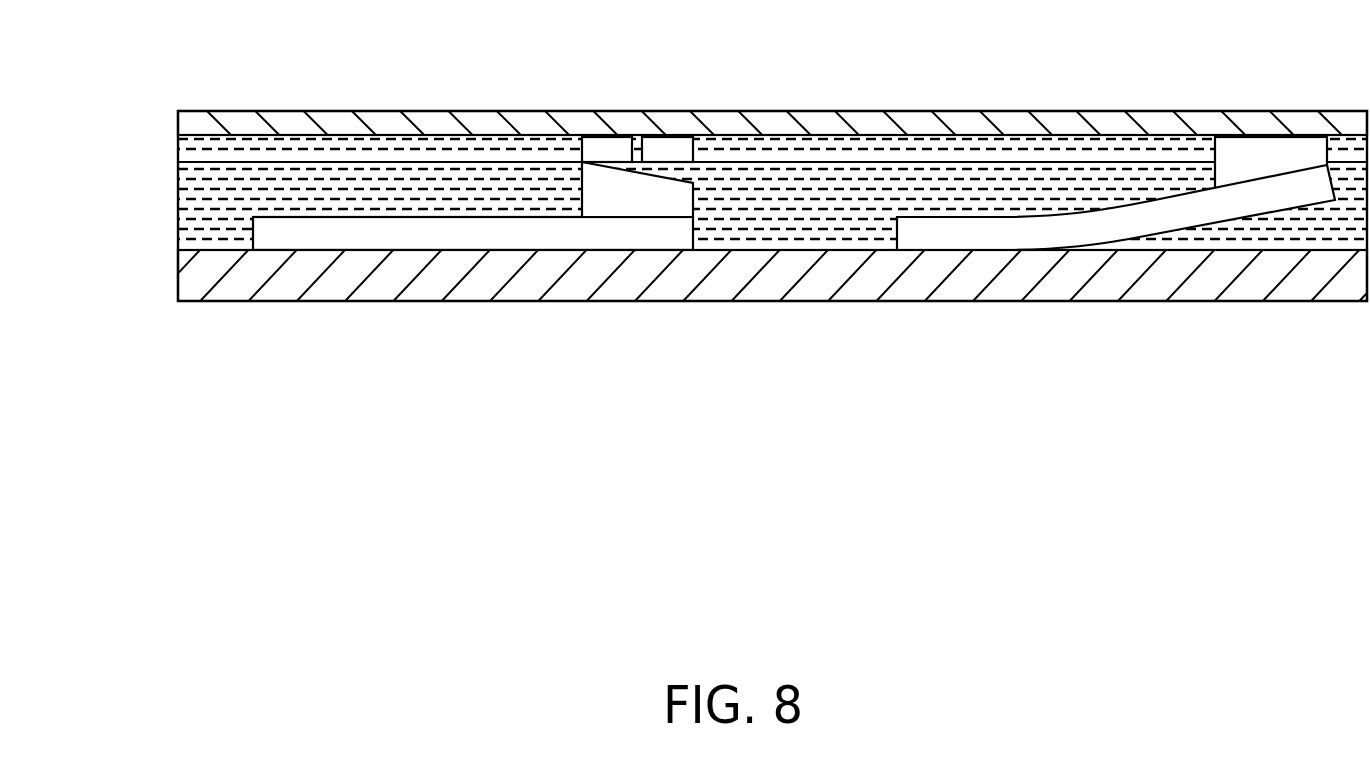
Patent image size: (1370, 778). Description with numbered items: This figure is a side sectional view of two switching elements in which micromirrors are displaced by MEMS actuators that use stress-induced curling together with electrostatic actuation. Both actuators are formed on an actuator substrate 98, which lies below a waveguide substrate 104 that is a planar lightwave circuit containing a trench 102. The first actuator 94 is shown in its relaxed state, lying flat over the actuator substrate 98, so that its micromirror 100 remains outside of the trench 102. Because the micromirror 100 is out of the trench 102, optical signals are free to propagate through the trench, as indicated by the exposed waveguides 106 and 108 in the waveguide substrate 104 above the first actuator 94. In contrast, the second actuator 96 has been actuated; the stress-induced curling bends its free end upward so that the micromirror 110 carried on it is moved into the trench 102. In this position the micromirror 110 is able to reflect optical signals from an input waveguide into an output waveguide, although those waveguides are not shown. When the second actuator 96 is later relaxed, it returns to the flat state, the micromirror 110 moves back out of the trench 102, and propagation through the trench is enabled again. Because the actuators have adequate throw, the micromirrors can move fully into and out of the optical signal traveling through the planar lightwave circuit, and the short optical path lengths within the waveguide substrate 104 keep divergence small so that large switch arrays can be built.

The first actuator 94 is at (500, 237).
The second actuator 96 is at (1007, 235).
The actuator substrate 98 is at (332, 299).
The micromirror 100 is at (581, 160).
The trench 102 is at (178, 153).
The waveguide substrate 104 is at (380, 120).
The waveguide 106 is at (600, 148).
The waveguide 108 is at (660, 148).
The micromirror 110 is at (1243, 147).